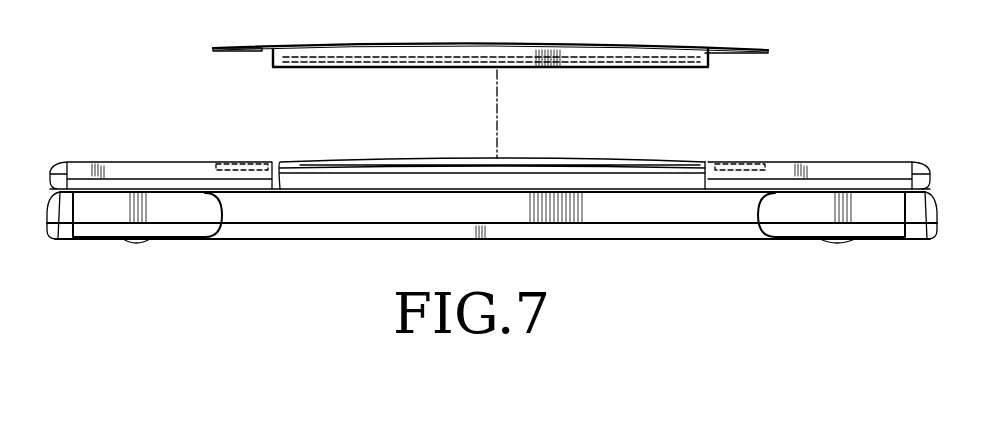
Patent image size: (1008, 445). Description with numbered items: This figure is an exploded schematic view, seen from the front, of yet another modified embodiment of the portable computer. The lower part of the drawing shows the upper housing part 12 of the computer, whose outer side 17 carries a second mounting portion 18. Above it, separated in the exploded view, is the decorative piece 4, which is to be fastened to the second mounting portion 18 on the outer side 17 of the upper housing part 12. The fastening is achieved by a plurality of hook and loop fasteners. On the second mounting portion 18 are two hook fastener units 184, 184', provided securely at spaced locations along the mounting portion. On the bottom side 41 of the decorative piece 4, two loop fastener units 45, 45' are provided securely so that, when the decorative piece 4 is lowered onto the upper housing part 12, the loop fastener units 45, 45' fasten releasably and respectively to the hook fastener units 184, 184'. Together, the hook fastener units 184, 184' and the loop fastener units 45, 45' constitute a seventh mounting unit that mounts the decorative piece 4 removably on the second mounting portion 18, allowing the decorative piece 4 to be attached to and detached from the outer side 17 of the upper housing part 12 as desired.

The decorative piece 4 is at (685, 44).
The bottom side 41 is at (763, 61).
The loop fastener unit 45 is at (491, 87).
The loop fastener unit 45' is at (254, 82).
The upper housing part 12 is at (172, 186).
The hook fastener unit 184 is at (492, 145).
The second mounting portion 18 is at (705, 165).
The hook fastener unit 184' is at (739, 132).
The outer side 17 is at (815, 162).